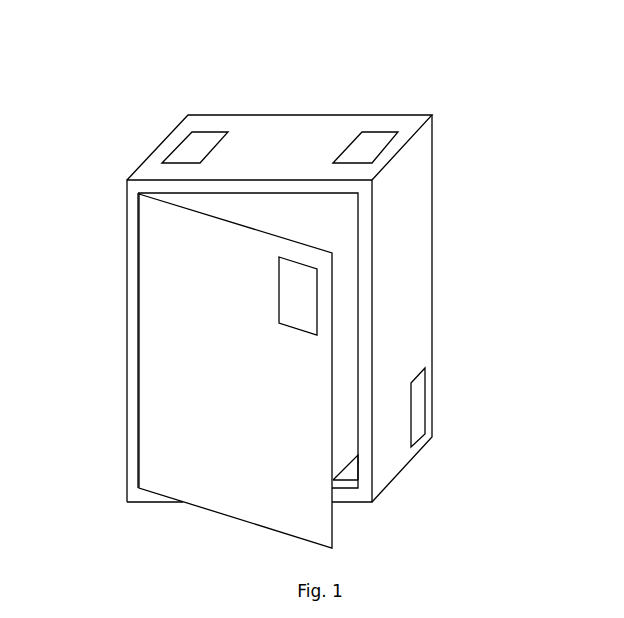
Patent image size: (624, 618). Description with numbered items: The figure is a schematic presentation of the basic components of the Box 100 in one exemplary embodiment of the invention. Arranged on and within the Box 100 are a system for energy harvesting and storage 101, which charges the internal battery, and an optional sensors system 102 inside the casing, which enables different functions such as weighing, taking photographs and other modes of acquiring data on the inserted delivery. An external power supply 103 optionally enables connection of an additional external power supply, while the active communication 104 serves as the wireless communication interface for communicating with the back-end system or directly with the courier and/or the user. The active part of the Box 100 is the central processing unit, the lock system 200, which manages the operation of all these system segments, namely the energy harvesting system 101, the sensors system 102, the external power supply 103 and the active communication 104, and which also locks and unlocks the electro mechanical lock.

The Box 100 is at (422, 170).
The system for energy harvesting and storage 101 is at (185, 150).
The sensors system 102 is at (348, 477).
The external power supply 103 is at (418, 402).
The active communication 104 is at (377, 150).
The lock system 200 is at (302, 282).